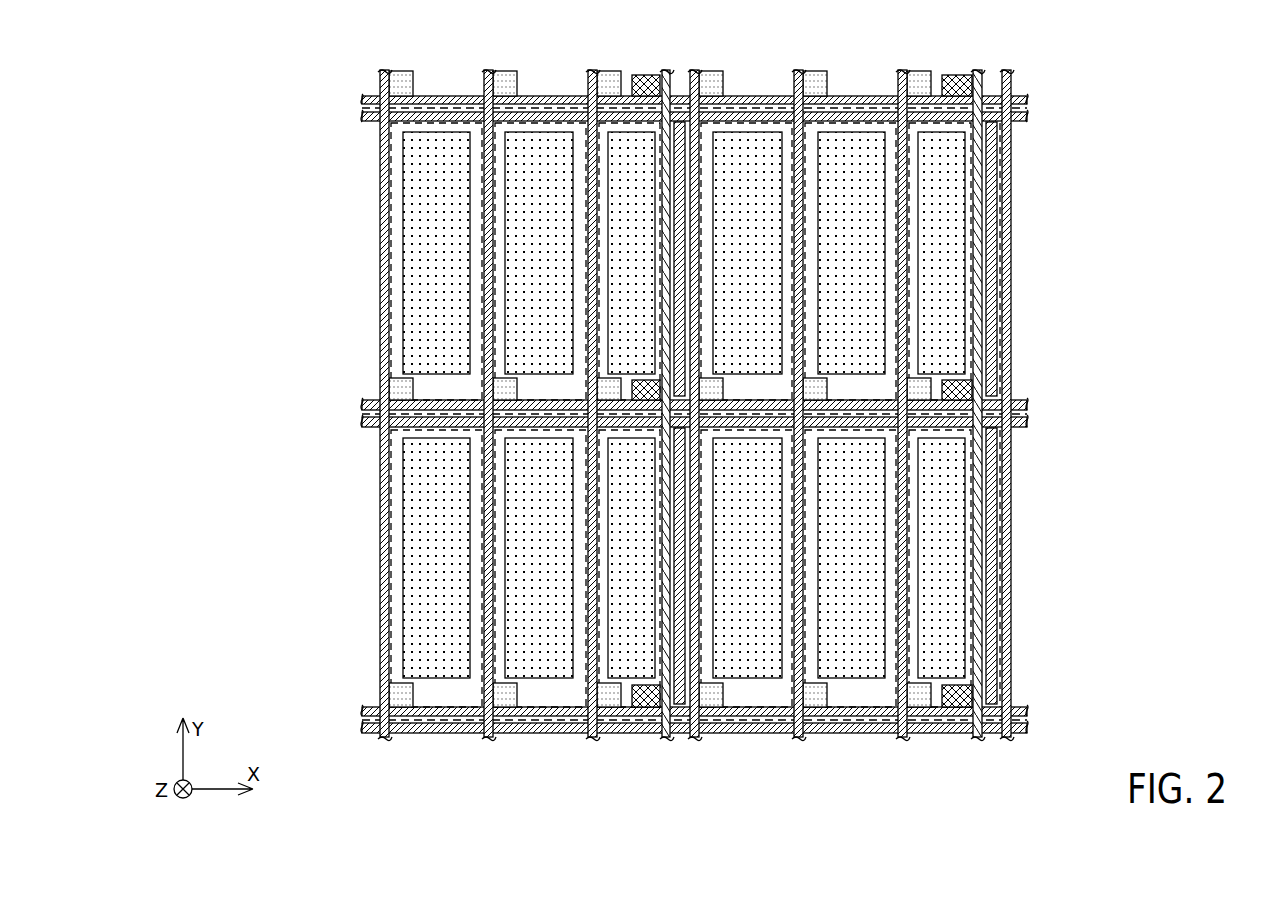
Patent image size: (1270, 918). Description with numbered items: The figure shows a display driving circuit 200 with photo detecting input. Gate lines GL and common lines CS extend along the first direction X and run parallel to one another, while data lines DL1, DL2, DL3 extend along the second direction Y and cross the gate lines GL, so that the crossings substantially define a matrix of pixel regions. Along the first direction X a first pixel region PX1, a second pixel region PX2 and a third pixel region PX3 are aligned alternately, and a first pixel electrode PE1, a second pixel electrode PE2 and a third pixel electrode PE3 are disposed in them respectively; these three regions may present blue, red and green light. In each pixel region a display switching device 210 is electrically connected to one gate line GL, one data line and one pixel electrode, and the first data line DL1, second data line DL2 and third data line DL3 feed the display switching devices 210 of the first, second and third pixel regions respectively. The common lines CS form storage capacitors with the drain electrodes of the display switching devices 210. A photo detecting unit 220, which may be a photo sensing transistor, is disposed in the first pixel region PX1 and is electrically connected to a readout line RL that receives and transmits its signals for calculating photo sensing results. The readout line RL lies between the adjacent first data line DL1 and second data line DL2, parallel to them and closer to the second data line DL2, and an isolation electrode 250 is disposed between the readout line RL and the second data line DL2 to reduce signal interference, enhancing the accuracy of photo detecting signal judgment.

The display driving circuit 200 is at (1108, 98).
The display switching device 210 is at (605, 382).
The photo detecting unit 220 is at (645, 397).
The isolation electrode 250 is at (993, 273).
The gate line GL is at (368, 100).
The common line CS is at (368, 117).
The first pixel region PX1 is at (623, 104).
The second pixel region PX2 is at (432, 104).
The third pixel region PX3 is at (535, 104).
The first pixel electrode PE1 is at (620, 242).
The second pixel electrode PE2 is at (423, 178).
The third pixel electrode PE3 is at (520, 213).
The first data line DL1 is at (592, 740).
The second data line DL2 is at (384, 740).
The third data line DL3 is at (489, 740).
The readout line RL is at (672, 740).